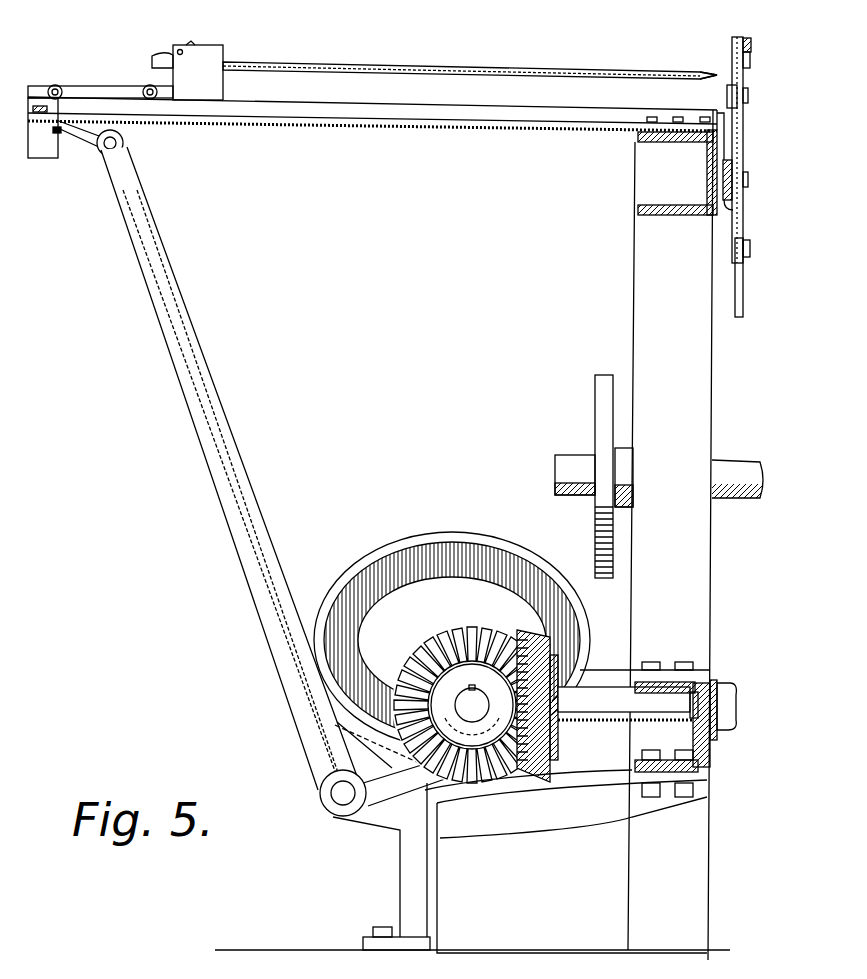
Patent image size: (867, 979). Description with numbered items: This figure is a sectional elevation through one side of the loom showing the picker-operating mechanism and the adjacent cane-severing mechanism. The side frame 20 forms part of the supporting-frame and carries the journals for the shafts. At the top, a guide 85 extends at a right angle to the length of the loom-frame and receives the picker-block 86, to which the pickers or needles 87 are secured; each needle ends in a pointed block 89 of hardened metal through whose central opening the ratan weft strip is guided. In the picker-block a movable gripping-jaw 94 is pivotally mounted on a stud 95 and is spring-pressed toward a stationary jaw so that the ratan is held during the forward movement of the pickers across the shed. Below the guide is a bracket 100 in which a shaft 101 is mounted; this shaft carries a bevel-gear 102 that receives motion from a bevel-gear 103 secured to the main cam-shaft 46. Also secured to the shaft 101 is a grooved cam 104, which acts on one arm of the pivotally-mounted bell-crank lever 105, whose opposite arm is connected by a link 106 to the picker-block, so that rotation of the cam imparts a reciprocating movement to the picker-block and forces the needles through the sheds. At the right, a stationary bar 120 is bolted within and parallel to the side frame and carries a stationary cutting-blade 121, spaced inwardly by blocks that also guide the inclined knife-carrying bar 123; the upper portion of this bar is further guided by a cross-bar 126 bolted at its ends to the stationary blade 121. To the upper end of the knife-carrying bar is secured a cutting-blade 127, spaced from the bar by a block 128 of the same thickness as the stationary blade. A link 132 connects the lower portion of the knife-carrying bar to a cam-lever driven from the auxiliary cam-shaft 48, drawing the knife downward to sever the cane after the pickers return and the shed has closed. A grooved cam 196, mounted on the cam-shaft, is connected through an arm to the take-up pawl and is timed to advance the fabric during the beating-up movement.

The side frame 20 is at (660, 200).
The main cam-shaft 46 is at (733, 705).
The auxiliary cam-shaft 48 is at (745, 498).
The guide 85 is at (427, 130).
The picker-block 86 is at (198, 72).
The pickers or needles 87 is at (440, 71).
The pointed block 89 is at (708, 72).
The movable gripping-jaw 94 is at (152, 56).
The stud 95 is at (178, 50).
The bracket 100 is at (522, 837).
The shaft 101 is at (472, 705).
The bevel-gear 102 is at (423, 643).
The bevel-gear 103 is at (553, 750).
The grooved cam 104 is at (385, 557).
The bell-crank lever 105 is at (250, 573).
The link 106 is at (90, 133).
The stationary bar 120 is at (733, 205).
The cutting-blade 121 is at (743, 132).
The knife-carrying bar 123 is at (733, 227).
The cross-bar 126 is at (727, 98).
The cutting-blade 127 is at (750, 62).
The block 128 is at (740, 38).
The link 132 is at (743, 302).
The grooved cam 196 is at (601, 391).